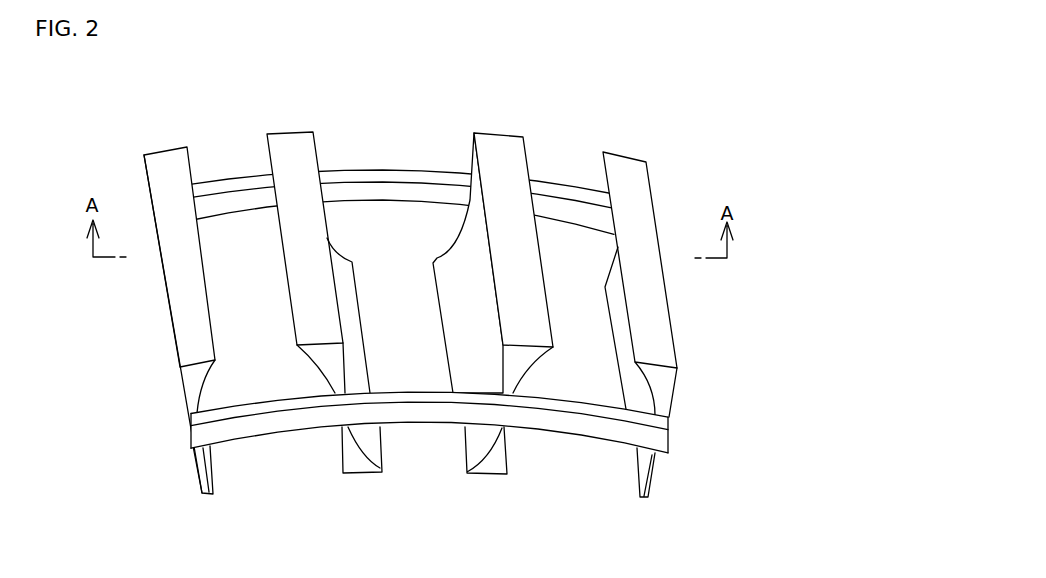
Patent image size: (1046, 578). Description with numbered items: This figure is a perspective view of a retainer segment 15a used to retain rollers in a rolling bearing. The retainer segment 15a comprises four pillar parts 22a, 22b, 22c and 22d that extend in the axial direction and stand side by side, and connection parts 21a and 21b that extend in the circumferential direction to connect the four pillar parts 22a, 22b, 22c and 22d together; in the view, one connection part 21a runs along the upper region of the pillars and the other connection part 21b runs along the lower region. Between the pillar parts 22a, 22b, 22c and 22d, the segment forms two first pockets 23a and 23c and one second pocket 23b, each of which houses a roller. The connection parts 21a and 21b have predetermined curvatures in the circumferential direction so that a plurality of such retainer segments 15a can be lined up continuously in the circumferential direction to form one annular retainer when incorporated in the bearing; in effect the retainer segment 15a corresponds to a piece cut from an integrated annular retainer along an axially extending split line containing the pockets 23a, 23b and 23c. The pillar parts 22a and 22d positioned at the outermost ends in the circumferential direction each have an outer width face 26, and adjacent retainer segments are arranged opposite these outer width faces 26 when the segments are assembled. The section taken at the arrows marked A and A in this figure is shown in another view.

The retainer segment 15a is at (652, 87).
The connection part 21a is at (396, 188).
The connection part 21b is at (295, 428).
The pillar part 22a is at (193, 387).
The pillar part 22b is at (357, 457).
The pillar part 22c is at (493, 460).
The pillar part 22d is at (662, 388).
The first pocket 23a is at (235, 388).
The second pocket 23b is at (415, 375).
The first pocket 23c is at (587, 390).
The outer width face 26 is at (172, 326).